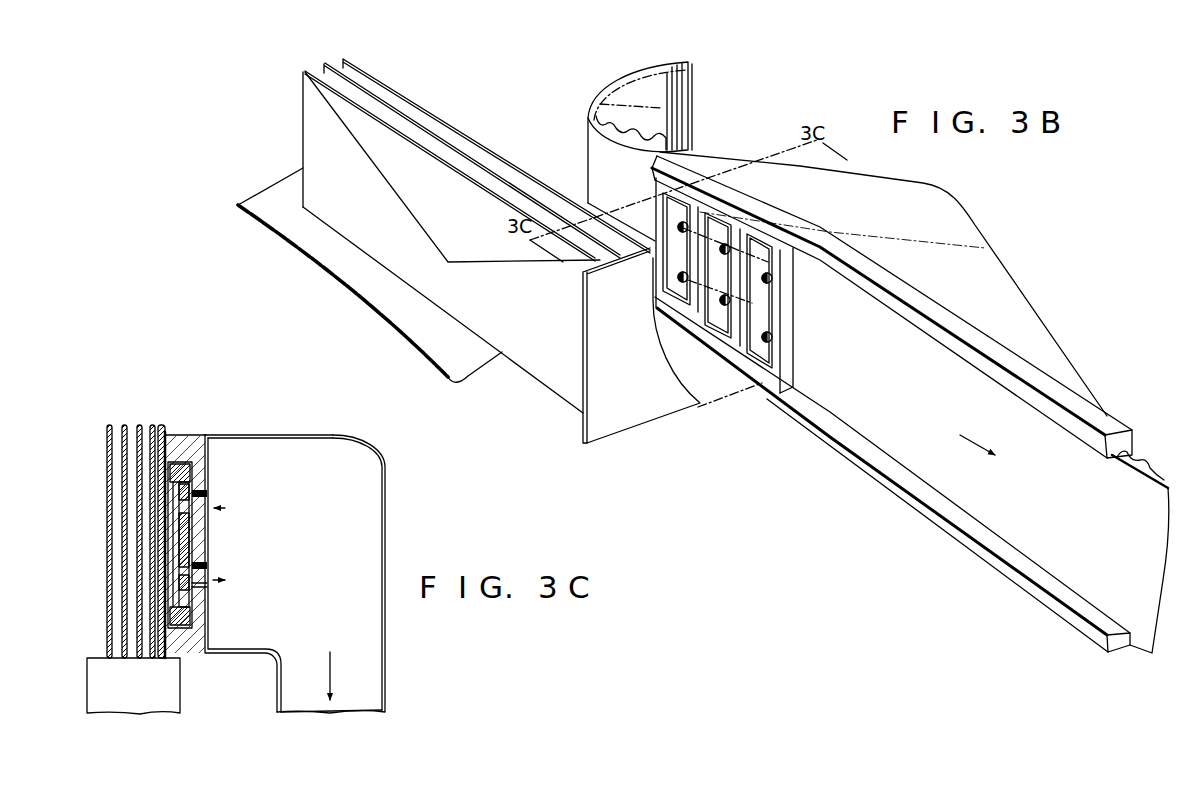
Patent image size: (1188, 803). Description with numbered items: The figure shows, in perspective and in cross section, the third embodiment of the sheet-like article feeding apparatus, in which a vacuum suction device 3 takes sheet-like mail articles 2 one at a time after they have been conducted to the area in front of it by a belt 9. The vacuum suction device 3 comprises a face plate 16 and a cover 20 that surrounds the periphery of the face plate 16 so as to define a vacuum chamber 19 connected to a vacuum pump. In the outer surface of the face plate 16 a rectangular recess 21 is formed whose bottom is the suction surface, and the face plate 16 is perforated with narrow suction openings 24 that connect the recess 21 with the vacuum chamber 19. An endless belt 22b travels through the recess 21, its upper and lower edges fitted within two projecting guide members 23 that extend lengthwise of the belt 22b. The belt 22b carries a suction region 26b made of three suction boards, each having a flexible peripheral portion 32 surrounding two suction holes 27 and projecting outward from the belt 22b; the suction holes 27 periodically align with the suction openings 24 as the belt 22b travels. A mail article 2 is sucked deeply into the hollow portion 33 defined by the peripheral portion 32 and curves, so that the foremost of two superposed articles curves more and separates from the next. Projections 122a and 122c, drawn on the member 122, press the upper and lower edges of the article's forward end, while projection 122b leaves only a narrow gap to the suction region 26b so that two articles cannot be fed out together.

In FIG. 3B, the sheet-like mail article 2 is at (437, 120).
In FIG. 3C, the sheet-like mail article 2 is at (126, 423).
In FIG. 3B, the vacuum suction device 3 is at (1003, 268).
In FIG. 3C, the vacuum suction device 3 is at (313, 418).
In FIG. 3B, the belt 9 is at (366, 294).
In FIG. 3C, the belt 9 is at (168, 700).
In FIG. 3C, the face plate 16 is at (202, 435).
In FIG. 3C, the vacuum chamber 19 is at (355, 460).
In FIG. 3C, the cover 20 is at (270, 433).
In FIG. 3C, the rectangular recess 21 is at (190, 468).
In FIG. 3B, the belt 22b is at (1133, 480).
In FIG. 3C, the belt 22b is at (190, 543).
In FIG. 3B, the guide member 23 is at (1094, 438).
In FIG. 3C, the guide member 23 is at (180, 442).
In FIG. 3C, the suction opening 24 is at (207, 502).
In FIG. 3B, the suction region 26b is at (797, 337).
In FIG. 3B, the suction hole 27 is at (773, 341).
In FIG. 3C, the suction hole 27 is at (182, 512).
In FIG. 3B, the peripheral portion 32 is at (793, 378).
In FIG. 3C, the hollow portion 33 is at (192, 598).
In FIG. 3B, the end plate 122 is at (625, 420).
In FIG. 3B, the projection 122a is at (773, 222).
In FIG. 3B, the projection 122b is at (725, 299).
In FIG. 3B, the projection 122c is at (757, 390).